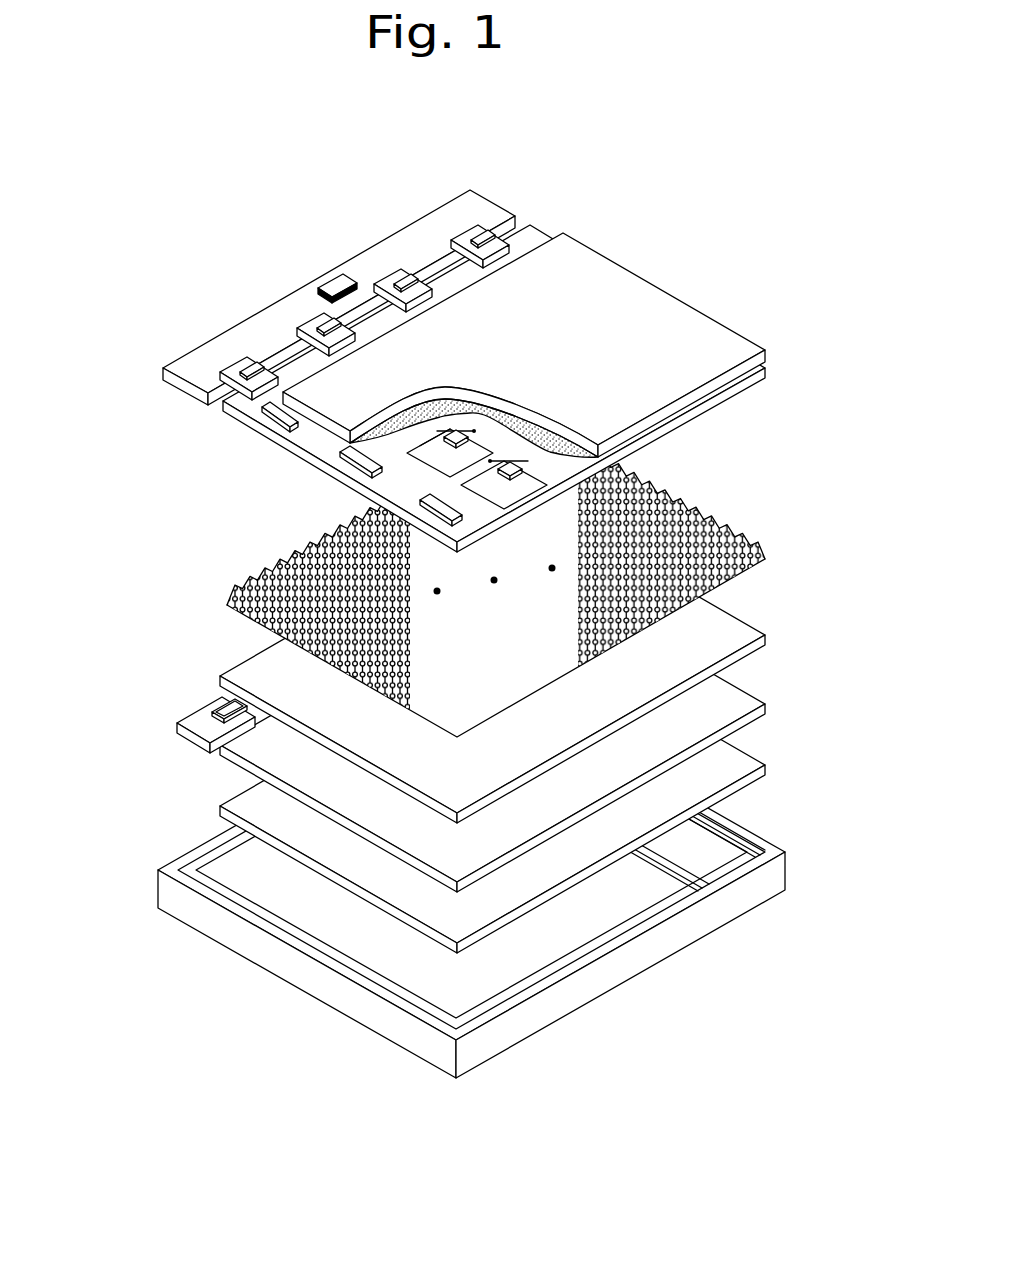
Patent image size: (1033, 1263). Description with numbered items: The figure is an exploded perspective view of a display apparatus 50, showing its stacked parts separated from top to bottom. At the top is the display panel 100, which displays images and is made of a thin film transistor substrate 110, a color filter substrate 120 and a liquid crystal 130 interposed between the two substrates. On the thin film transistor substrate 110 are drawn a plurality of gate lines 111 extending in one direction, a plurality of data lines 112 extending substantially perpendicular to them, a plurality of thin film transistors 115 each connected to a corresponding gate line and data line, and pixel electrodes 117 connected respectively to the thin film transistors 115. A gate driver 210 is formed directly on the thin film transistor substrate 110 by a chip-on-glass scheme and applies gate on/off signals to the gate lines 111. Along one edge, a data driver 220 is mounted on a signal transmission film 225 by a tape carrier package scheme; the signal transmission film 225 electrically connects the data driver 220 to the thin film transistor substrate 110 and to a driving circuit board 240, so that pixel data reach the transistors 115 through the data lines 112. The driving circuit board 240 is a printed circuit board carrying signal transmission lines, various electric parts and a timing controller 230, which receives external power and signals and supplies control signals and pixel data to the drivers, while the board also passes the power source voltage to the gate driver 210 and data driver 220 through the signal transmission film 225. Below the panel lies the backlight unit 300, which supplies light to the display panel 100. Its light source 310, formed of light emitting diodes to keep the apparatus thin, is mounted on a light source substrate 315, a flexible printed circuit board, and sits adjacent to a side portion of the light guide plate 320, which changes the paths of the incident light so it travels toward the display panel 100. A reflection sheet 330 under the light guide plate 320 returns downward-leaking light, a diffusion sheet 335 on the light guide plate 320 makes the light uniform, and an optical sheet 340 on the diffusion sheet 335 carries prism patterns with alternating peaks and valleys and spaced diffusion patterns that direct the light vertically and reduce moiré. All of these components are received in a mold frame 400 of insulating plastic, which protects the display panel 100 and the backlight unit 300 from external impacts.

The display apparatus 50 is at (659, 146).
The display panel 100 is at (550, 388).
The thin film transistor substrate 110 is at (523, 388).
The gate lines 111 is at (508, 451).
The data lines 112 is at (485, 433).
The thin film transistors 115 is at (442, 427).
The pixel electrodes 117 is at (428, 441).
The color filter substrate 120 is at (738, 388).
The liquid crystal 130 is at (565, 428).
The gate driver 210 is at (343, 458).
The data driver 220 is at (484, 222).
The signal transmission film 225 is at (466, 230).
The timing controller 230 is at (333, 285).
The driving circuit board 240 is at (381, 254).
The backlight unit 300 is at (396, 690).
The light source 310 is at (220, 703).
The light source substrate 315 is at (200, 717).
The light guide plate 320 is at (263, 753).
The reflection sheet 330 is at (252, 800).
The diffusion sheet 335 is at (260, 673).
The optical sheet 340 is at (422, 582).
The mold frame 400 is at (167, 892).